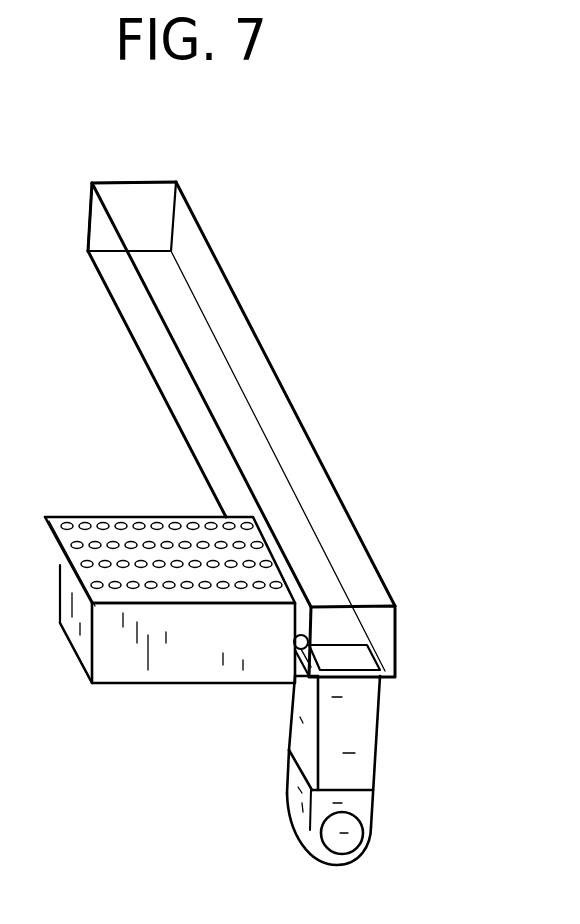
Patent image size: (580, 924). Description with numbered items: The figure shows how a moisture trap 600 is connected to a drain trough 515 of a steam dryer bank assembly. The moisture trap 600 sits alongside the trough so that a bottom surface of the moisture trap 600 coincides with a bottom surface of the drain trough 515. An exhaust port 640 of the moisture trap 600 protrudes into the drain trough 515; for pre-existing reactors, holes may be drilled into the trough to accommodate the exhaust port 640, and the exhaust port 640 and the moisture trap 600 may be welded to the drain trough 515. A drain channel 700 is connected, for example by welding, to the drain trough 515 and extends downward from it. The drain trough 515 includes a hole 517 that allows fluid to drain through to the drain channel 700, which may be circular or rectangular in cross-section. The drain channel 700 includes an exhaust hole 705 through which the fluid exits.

The drain trough 515 is at (367, 547).
The hole 517 is at (357, 655).
The moisture trap 600 is at (130, 653).
The exhaust port 640 is at (296, 641).
The drain channel 700 is at (343, 733).
The exhaust hole 705 is at (325, 834).